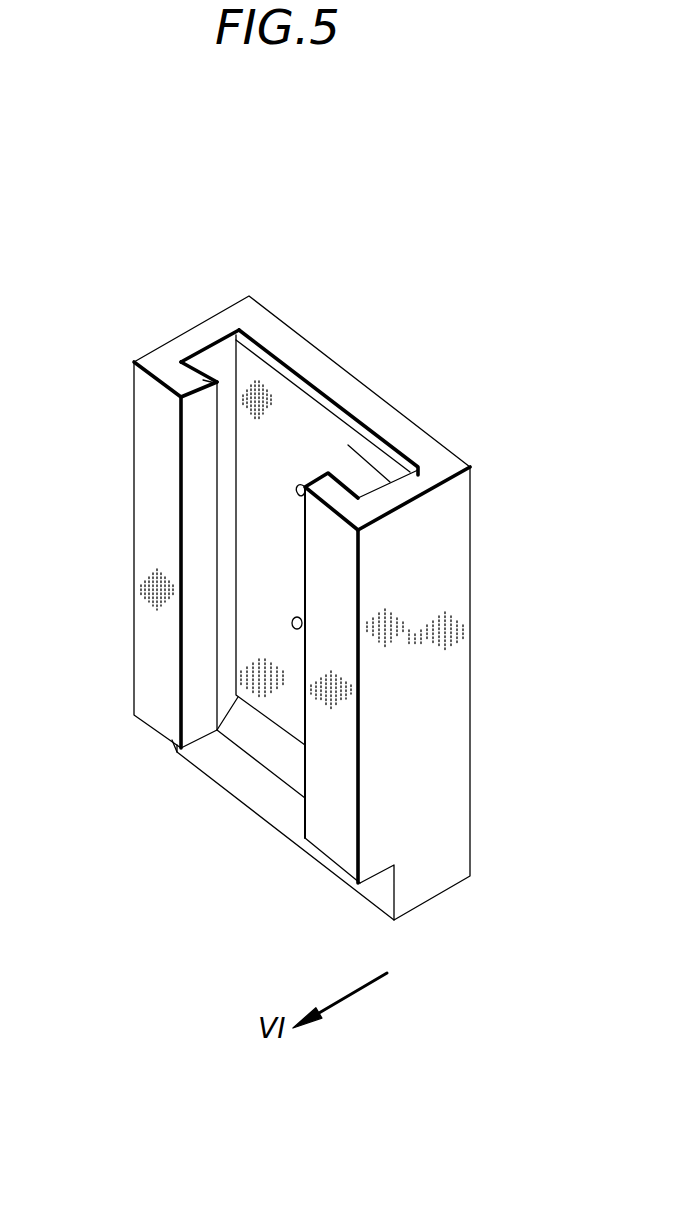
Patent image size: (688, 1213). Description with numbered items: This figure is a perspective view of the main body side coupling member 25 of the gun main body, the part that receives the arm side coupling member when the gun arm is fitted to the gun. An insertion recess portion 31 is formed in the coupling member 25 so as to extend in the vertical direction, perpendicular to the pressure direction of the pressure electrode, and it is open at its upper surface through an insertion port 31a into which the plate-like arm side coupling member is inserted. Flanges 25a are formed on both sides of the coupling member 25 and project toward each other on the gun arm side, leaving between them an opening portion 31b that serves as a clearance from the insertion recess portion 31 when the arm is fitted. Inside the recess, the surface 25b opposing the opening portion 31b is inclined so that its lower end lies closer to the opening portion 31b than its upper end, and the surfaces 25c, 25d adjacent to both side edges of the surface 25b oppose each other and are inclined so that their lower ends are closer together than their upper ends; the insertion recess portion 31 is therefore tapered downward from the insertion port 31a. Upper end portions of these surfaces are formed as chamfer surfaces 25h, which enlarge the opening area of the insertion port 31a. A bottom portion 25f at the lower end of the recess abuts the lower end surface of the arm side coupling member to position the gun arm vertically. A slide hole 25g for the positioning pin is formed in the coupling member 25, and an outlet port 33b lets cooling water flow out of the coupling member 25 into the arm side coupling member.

The main body side coupling member 25 is at (184, 324).
The flanges 25a is at (200, 532).
The surface 25b is at (283, 390).
The surface 25c is at (217, 355).
The surface 25d is at (385, 488).
The bottom portion 25f is at (258, 750).
The slide hole 25g is at (300, 490).
The chamfer surfaces 25h is at (205, 380).
The insertion recess portion 31 is at (302, 430).
The insertion port 31a is at (380, 482).
The opening portion 31b is at (293, 577).
The outlet port 33b is at (303, 625).